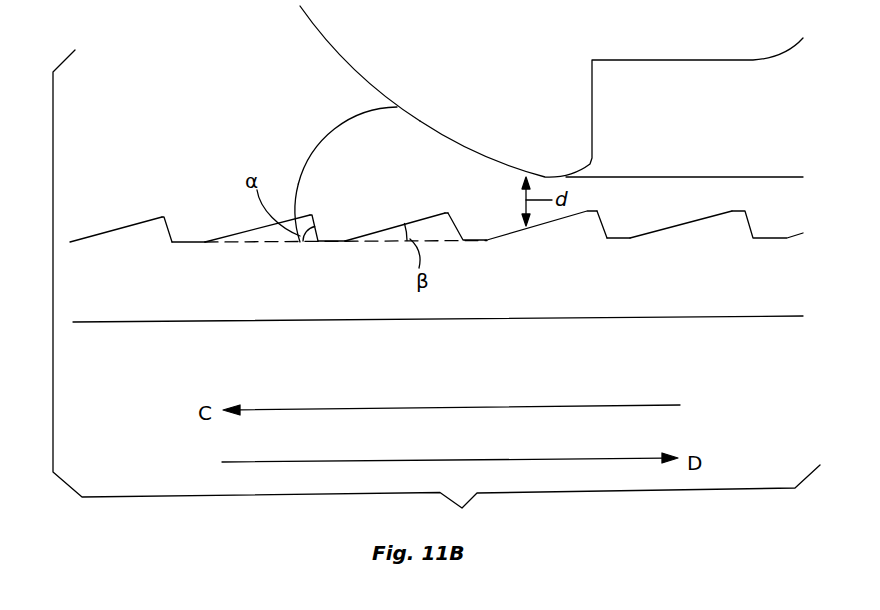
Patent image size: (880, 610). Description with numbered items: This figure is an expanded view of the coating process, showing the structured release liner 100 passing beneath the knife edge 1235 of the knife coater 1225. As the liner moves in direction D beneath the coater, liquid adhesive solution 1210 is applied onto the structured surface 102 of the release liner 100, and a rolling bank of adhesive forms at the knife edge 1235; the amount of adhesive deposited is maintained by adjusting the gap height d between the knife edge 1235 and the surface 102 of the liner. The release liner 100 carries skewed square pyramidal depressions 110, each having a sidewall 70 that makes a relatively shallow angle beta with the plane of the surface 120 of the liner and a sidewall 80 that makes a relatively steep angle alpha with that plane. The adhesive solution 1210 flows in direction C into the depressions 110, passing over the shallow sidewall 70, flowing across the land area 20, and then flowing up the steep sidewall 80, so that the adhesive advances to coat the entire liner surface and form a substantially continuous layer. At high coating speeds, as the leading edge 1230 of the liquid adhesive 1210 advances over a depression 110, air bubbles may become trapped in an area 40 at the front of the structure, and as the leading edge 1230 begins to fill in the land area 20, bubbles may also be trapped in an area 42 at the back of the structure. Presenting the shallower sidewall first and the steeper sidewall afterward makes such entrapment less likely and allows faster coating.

The land area 20 is at (333, 242).
The area at the front of the structure 40 is at (631, 234).
The area at the back of the structure 42 is at (605, 235).
The sidewall 70 is at (412, 222).
The sidewall 80 is at (318, 222).
The release liner 100 is at (143, 295).
The surface 102 is at (114, 229).
The depressions 110 is at (173, 241).
The surface of the release liner 120 is at (447, 213).
The liquid adhesive solution 1210 is at (362, 128).
The knife coater 1225 is at (323, 14).
The leading edge 1230 is at (299, 184).
The knife edge 1235 is at (448, 137).